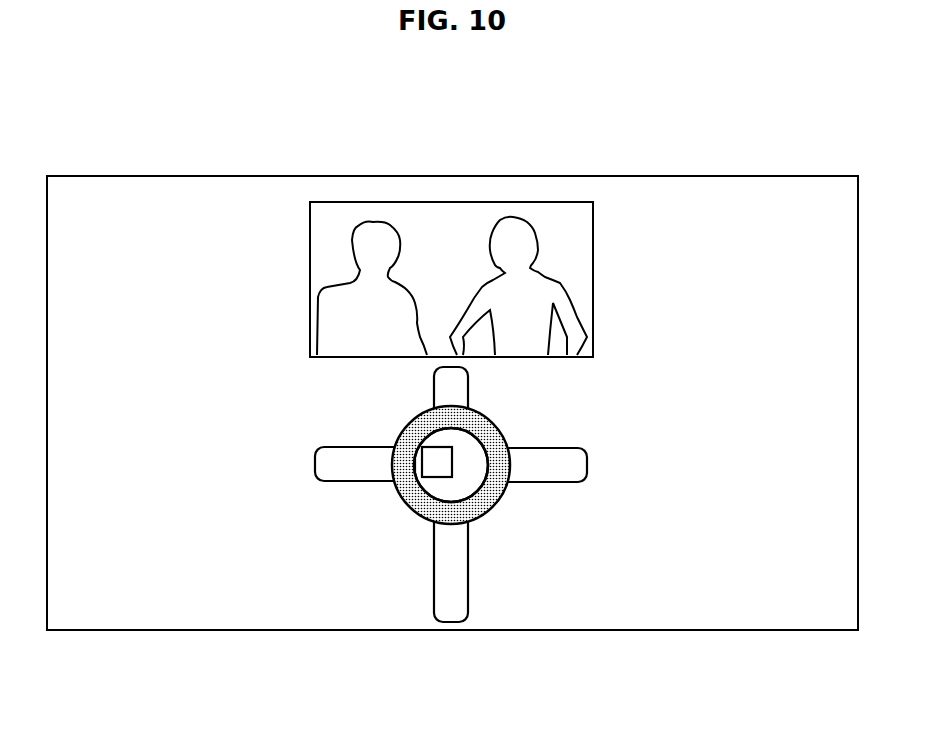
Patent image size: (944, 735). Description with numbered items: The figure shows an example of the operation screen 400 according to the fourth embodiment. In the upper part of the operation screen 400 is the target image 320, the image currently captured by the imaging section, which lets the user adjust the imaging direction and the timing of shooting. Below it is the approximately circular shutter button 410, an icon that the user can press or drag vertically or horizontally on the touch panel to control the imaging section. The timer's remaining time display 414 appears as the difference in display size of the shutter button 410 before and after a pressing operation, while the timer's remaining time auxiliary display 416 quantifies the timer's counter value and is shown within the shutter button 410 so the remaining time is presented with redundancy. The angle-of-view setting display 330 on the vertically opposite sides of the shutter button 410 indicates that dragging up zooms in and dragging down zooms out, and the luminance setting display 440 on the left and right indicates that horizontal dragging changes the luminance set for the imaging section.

The operation screen 400 is at (723, 176).
The target image 320 is at (450, 202).
The luminance setting display 440 is at (317, 481).
The angle-of-view setting display 330 is at (450, 622).
The shutter button 410 is at (422, 495).
The timer's remaining time display 414 is at (500, 500).
The timer's remaining time auxiliary display 416 is at (422, 462).